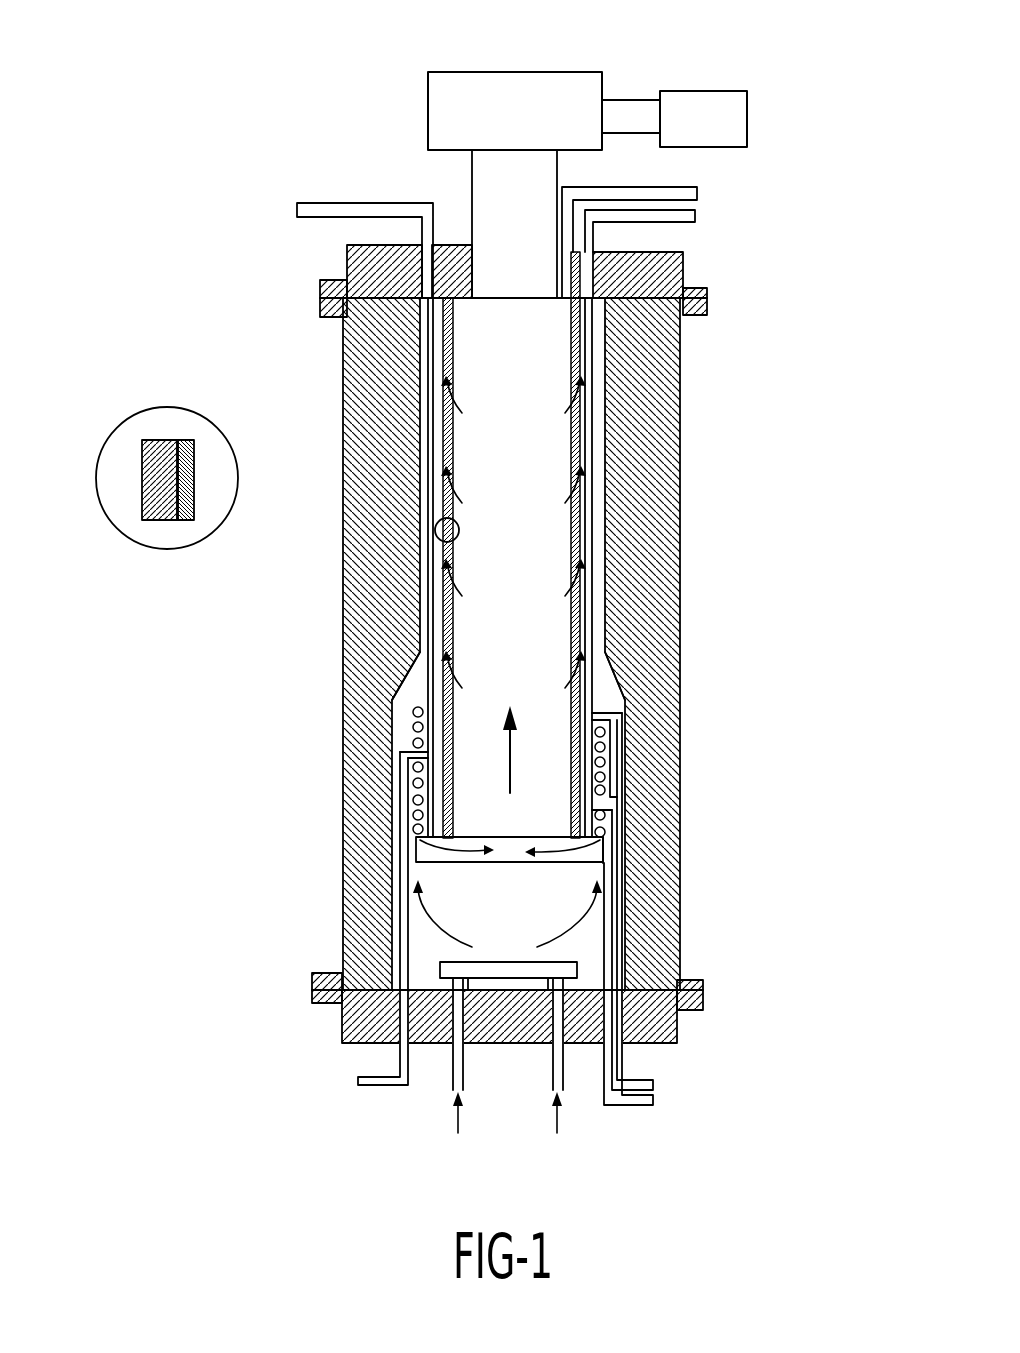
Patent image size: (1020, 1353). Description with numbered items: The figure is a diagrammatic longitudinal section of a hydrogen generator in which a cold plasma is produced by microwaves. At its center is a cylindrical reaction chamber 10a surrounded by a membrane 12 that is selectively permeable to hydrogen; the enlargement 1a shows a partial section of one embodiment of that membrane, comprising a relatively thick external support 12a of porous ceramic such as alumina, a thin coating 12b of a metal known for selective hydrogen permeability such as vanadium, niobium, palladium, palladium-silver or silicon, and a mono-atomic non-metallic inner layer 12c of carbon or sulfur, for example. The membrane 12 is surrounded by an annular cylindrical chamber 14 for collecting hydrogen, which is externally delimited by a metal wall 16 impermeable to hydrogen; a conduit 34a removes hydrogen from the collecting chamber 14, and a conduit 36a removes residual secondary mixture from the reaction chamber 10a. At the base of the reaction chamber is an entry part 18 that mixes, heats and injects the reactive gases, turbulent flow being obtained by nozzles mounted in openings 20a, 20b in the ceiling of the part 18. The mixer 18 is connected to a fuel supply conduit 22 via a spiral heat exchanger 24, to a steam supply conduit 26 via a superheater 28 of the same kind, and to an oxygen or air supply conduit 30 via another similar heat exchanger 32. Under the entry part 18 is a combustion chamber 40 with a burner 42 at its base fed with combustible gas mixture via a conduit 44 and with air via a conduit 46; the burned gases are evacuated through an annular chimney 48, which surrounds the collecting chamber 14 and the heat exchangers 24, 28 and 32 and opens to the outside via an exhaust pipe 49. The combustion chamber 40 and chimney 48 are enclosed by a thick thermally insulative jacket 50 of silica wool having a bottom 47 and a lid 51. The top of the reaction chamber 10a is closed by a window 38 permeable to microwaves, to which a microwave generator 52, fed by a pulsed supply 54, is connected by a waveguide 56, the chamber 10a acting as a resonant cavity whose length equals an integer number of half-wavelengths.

The enlargement 1a is at (437, 527).
The reaction chamber 10a is at (540, 557).
The membrane 12 is at (600, 512).
The external support 12a is at (160, 498).
The coating 12b is at (183, 510).
The mono-atomic non-metallic inner layer 12c is at (193, 455).
The annular cylindrical chamber 14 is at (600, 432).
The metal wall 16 is at (600, 408).
The entry part 18 is at (523, 856).
The opening 20a is at (595, 813).
The opening 20b is at (420, 806).
The fuel supply conduit 22 is at (664, 1100).
The spiral heat exchanger 24 is at (615, 832).
The steam supply conduit 26 is at (348, 1080).
The superheater 28 is at (413, 779).
The oxygen supply conduit 30 is at (664, 1085).
The heat exchanger 32 is at (603, 773).
The conduit 34a is at (700, 216).
The conduit 36a is at (700, 193).
The window 38 is at (517, 297).
The combustion chamber 40 is at (520, 938).
The burner 42 is at (455, 965).
The conduit 44 is at (557, 1132).
The conduit 46 is at (458, 1132).
The bottom 47 is at (660, 1022).
The annular chimney 48 is at (607, 700).
The exhaust pipe 49 is at (297, 210).
The thermally insulative jacket 50 is at (650, 748).
The lid 51 is at (668, 271).
The microwave generator 52 is at (531, 93).
The supply 54 is at (708, 110).
The waveguide 56 is at (497, 188).